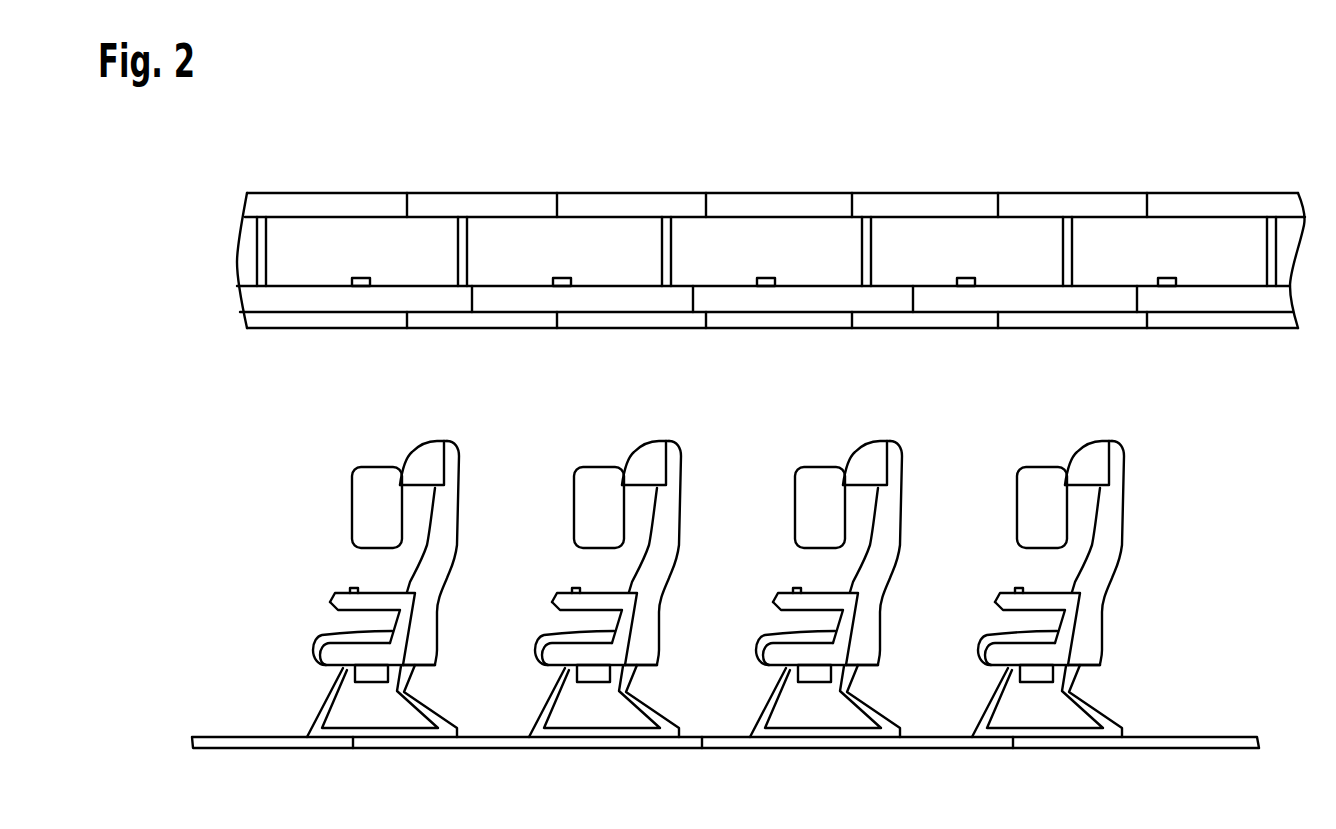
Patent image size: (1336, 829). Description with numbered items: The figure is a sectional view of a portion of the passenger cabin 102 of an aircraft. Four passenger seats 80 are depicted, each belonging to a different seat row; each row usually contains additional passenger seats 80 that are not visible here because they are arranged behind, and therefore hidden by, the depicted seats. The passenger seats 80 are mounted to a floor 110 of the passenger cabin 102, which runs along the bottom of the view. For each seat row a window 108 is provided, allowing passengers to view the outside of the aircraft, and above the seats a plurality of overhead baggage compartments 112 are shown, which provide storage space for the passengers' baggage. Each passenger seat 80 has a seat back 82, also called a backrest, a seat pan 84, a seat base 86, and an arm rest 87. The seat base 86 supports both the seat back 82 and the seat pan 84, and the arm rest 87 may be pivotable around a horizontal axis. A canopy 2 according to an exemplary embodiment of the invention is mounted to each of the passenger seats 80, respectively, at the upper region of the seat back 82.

The canopy 2 is at (405, 437).
The passenger seat 80 is at (455, 420).
The seat back 82 is at (443, 553).
The seat pan 84 is at (328, 642).
The seat base 86 is at (422, 708).
The arm rest 87 is at (378, 600).
The passenger cabin 102 is at (236, 593).
The window 108 is at (362, 492).
The floor 110 is at (1207, 736).
The overhead baggage compartment 112 is at (392, 240).